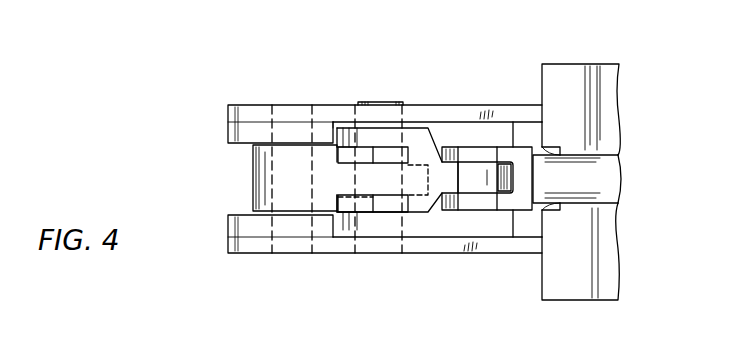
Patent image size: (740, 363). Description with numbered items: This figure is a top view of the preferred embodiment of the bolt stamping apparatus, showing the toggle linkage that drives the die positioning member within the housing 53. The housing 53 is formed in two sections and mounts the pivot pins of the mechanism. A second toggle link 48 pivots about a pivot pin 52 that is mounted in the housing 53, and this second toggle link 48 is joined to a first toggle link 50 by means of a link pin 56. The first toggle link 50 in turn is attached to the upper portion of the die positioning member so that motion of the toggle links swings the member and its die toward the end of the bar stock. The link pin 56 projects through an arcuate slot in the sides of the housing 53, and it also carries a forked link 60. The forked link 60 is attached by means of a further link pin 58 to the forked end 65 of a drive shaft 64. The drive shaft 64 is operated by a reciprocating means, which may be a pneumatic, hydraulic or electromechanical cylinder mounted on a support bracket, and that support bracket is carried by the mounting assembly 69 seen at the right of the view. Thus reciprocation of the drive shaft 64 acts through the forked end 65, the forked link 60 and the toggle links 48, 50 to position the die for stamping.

The second toggle link 48 is at (258, 178).
The first toggle link 50 is at (388, 205).
The pivot pin 52 is at (289, 240).
The housing 53 is at (325, 108).
The link pin 56 is at (382, 101).
The link pin 58 is at (495, 205).
The forked link 60 is at (434, 128).
The drive shaft 64 is at (605, 160).
The forked end 65 is at (520, 125).
The mounting assembly 69 is at (568, 72).